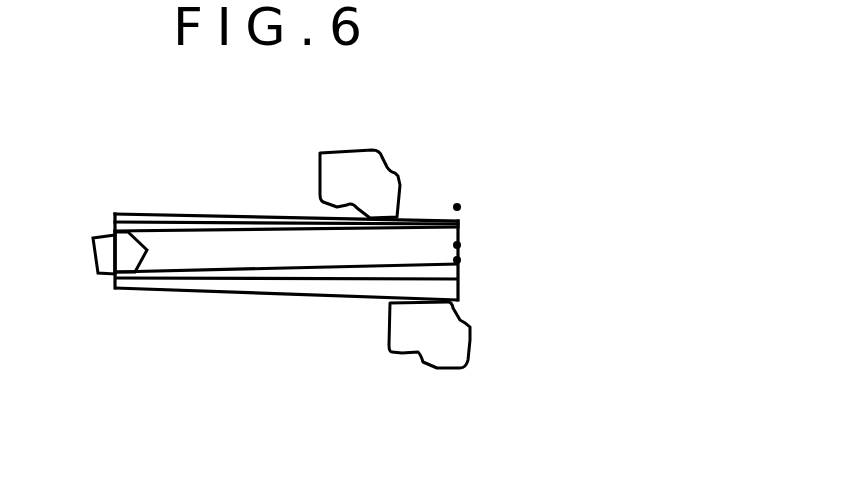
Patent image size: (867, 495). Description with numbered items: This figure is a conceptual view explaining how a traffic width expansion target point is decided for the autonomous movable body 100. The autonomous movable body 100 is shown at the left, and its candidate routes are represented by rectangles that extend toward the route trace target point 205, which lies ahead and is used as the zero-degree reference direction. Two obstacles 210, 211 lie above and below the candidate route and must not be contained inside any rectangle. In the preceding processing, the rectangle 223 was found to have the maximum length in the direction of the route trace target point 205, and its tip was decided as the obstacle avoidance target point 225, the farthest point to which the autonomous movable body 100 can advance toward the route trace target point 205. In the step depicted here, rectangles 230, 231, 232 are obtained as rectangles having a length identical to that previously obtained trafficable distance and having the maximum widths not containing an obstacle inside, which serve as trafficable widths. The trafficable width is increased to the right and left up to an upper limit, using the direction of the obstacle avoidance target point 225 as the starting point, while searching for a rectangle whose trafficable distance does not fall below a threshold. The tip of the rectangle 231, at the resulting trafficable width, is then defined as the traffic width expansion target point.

The autonomous movable body 100 is at (92, 257).
The route trace target point 205 is at (461, 207).
The obstacle 210 is at (382, 153).
The obstacle 211 is at (472, 338).
The rectangle 223 is at (460, 262).
The obstacle avoidance target point 225 is at (461, 245).
The rectangle 230 is at (328, 270).
The rectangle 231 is at (275, 280).
The rectangle 232 is at (210, 293).